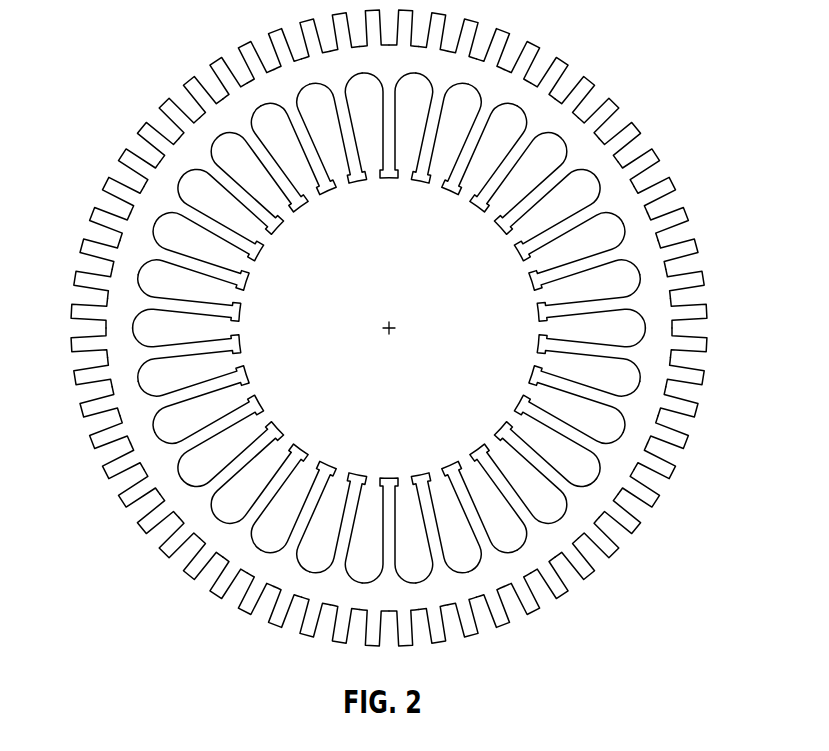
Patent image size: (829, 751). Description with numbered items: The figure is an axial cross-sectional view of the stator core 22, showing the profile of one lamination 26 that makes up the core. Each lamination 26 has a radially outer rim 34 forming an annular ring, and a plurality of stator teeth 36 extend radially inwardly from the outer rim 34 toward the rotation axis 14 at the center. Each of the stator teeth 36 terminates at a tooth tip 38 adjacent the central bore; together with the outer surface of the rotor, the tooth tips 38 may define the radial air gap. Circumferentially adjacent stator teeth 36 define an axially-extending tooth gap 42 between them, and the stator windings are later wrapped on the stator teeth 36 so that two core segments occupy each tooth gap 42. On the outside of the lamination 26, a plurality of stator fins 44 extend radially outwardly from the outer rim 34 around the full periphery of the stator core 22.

The rotation axis 14 is at (393, 324).
The stator core 22 is at (110, 42).
The lamination 26 is at (247, 87).
The radially outer rim 34 is at (547, 112).
The stator teeth 36 is at (278, 223).
The tooth tip 38 is at (253, 398).
The tooth gap 42 is at (163, 232).
The stator fins 44 is at (670, 183).